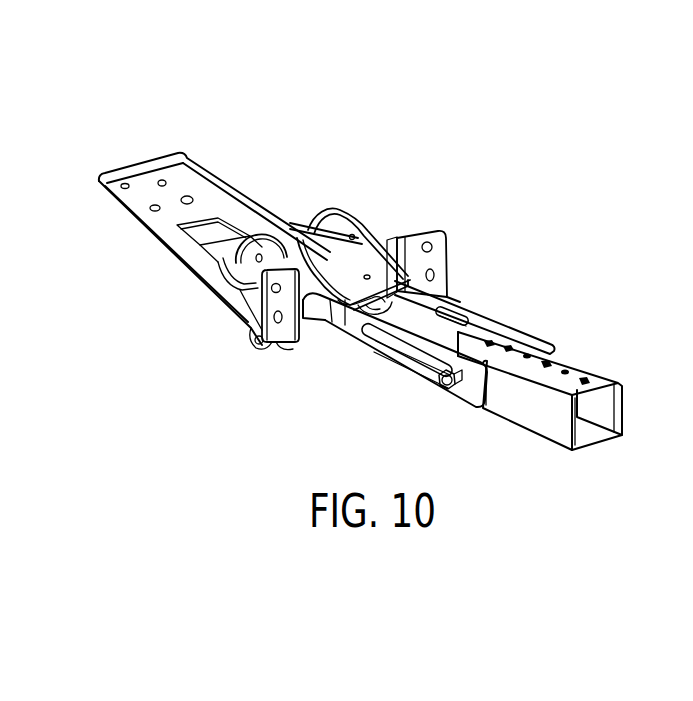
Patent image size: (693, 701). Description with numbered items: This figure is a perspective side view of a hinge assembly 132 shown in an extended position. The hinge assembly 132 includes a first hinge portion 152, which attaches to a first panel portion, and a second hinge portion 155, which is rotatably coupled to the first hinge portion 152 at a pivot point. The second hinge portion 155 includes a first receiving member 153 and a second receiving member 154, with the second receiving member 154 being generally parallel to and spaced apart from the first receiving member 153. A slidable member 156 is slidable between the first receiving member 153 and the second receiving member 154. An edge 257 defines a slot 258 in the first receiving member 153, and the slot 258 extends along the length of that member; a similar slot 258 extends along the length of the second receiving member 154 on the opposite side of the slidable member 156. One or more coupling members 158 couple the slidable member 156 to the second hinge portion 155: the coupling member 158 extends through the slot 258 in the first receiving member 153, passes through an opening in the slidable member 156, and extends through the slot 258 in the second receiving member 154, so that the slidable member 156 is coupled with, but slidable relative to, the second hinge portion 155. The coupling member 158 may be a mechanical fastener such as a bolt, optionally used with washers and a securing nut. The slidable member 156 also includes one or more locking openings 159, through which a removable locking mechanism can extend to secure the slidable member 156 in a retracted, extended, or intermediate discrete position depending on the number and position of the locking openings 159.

The hinge assembly 132 is at (306, 134).
The first hinge portion 152 is at (193, 253).
The first receiving member 153 is at (361, 336).
The second receiving member 154 is at (490, 315).
The second hinge portion 155 is at (361, 245).
The slidable member 156 is at (618, 383).
The coupling member 158 is at (446, 390).
The locking openings 159 is at (565, 372).
The edge 257 is at (427, 245).
The slot 258 is at (458, 316).